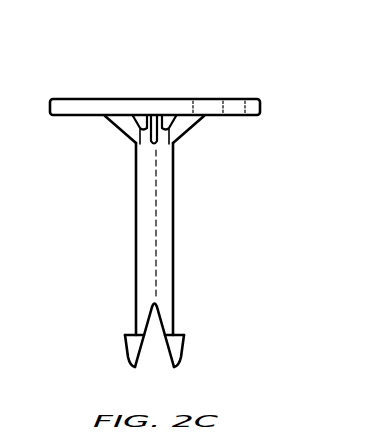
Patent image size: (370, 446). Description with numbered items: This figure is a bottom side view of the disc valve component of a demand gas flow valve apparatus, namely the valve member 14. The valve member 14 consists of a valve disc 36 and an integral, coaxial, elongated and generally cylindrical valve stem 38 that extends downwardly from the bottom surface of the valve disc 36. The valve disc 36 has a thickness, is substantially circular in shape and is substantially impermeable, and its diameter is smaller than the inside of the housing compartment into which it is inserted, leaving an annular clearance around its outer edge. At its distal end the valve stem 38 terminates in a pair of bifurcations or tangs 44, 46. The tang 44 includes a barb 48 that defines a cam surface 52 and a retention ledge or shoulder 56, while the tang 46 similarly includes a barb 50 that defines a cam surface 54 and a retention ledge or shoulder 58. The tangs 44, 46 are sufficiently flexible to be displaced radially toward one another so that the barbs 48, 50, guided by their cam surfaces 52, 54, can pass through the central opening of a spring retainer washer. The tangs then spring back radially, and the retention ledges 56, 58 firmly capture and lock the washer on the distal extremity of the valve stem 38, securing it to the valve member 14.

The valve member 14 is at (236, 46).
The valve disc 36 is at (103, 99).
The valve stem 38 is at (136, 205).
The tang 44 is at (177, 304).
The tang 46 is at (136, 324).
The barb 48 is at (166, 354).
The barb 50 is at (125, 350).
The cam surface 52 is at (186, 364).
The cam surface 54 is at (128, 362).
The retention ledge or shoulder 56 is at (185, 335).
The retention ledge or shoulder 58 is at (125, 335).